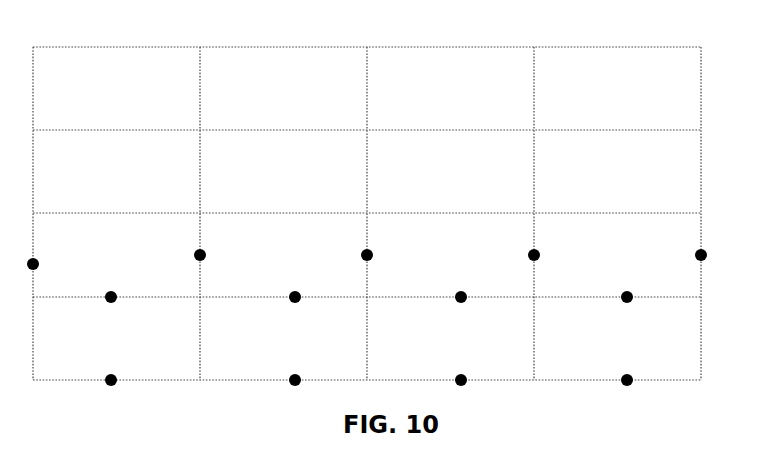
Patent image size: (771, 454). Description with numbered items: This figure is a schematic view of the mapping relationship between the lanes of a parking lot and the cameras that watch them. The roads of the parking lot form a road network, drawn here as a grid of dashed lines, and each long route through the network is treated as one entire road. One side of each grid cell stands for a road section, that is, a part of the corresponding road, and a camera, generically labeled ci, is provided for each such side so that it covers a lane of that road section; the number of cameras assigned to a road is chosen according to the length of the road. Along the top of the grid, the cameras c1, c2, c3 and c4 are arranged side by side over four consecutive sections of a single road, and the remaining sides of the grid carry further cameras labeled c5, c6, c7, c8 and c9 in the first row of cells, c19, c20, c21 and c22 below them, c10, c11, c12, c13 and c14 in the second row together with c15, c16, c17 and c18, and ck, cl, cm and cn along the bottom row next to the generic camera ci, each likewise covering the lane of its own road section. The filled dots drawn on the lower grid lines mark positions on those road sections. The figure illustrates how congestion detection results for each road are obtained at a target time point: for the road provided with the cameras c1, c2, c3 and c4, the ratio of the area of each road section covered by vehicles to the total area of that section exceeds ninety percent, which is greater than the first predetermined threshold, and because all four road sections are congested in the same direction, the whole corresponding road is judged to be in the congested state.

The camera c1 is at (106, 33).
The camera c2 is at (295, 30).
The camera c3 is at (440, 34).
The camera c4 is at (613, 29).
The cell c5 is at (62, 89).
The cell c6 is at (228, 85).
The cell c7 is at (400, 77).
The cell c8 is at (563, 77).
The cell c9 is at (725, 84).
The cell c10 is at (63, 160).
The cell c11 is at (228, 165).
The cell c12 is at (400, 165).
The cell c13 is at (563, 165).
The cell c14 is at (723, 170).
The cell c15 is at (98, 187).
The cell c16 is at (287, 187).
The cell c17 is at (432, 187).
The cell c18 is at (603, 187).
The cell c19 is at (100, 115).
The cell c20 is at (290, 112).
The cell c21 is at (435, 114).
The cell c22 is at (608, 112).
The cell ck is at (52, 337).
The cell cl is at (216, 340).
The cell cm is at (385, 340).
The cell cn is at (551, 340).
The camera ci is at (717, 340).